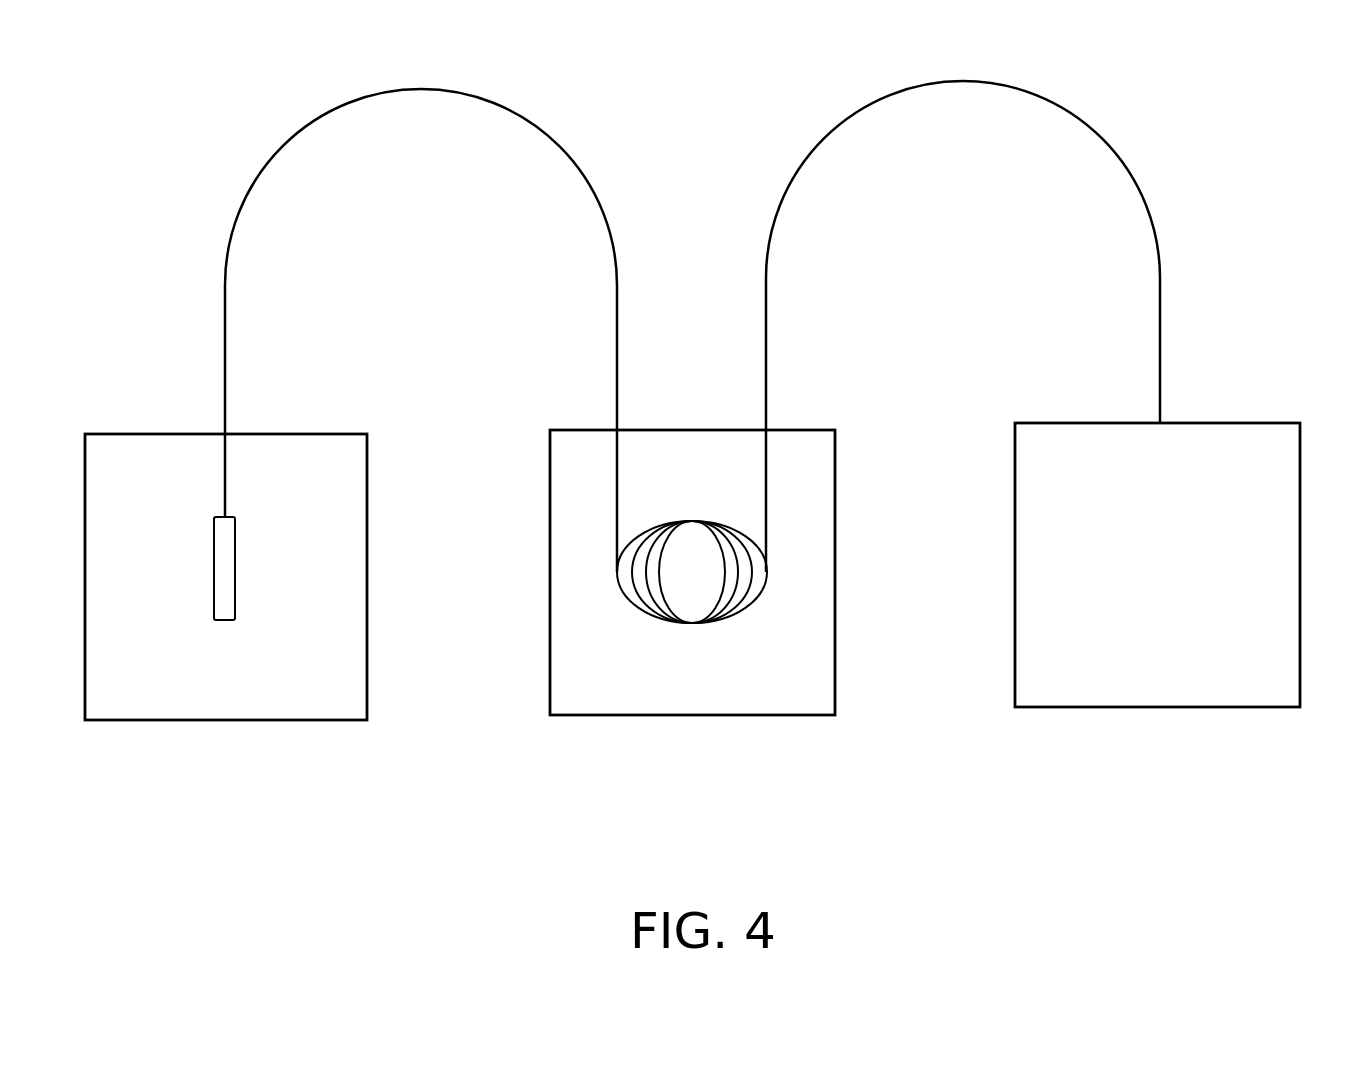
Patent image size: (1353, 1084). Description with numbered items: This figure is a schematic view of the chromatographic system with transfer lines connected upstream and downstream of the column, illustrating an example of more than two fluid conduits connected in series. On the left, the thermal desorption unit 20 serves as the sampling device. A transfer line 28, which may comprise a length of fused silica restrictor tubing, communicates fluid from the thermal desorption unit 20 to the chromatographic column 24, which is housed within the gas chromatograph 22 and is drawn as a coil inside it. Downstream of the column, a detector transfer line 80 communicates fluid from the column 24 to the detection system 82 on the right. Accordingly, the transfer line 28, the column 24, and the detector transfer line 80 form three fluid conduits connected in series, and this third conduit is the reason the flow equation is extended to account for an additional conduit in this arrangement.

The thermal desorption unit 20 is at (280, 720).
The gas chromatograph 22 is at (740, 715).
The chromatographic column 24 is at (692, 627).
The transfer line 28 is at (442, 92).
The detector transfer line 80 is at (988, 82).
The detection system 82 is at (1199, 707).